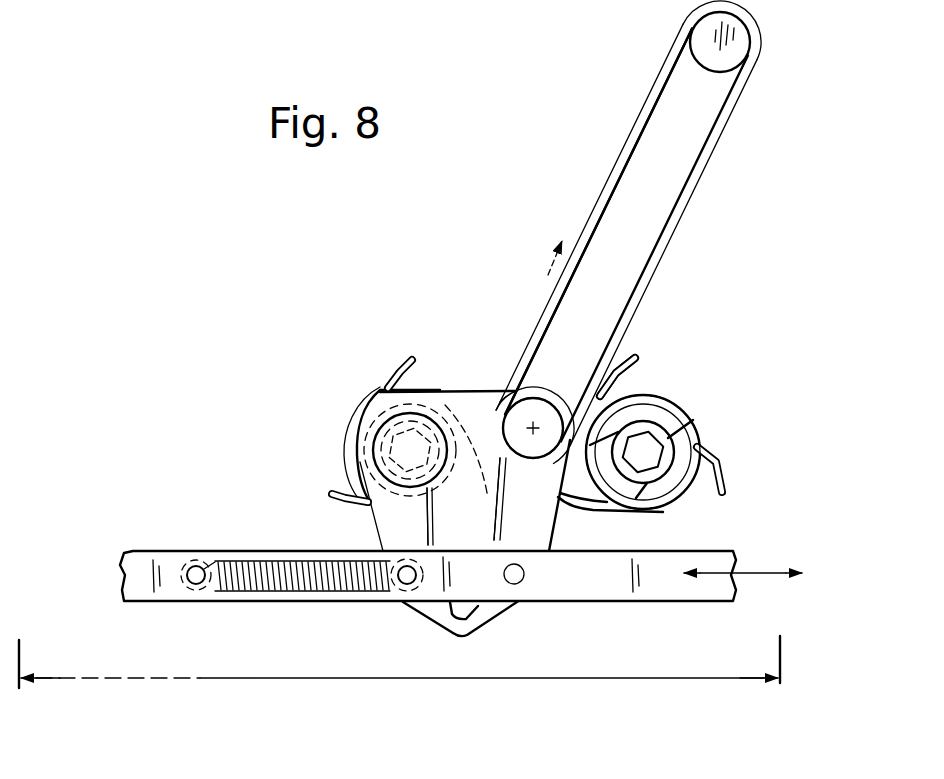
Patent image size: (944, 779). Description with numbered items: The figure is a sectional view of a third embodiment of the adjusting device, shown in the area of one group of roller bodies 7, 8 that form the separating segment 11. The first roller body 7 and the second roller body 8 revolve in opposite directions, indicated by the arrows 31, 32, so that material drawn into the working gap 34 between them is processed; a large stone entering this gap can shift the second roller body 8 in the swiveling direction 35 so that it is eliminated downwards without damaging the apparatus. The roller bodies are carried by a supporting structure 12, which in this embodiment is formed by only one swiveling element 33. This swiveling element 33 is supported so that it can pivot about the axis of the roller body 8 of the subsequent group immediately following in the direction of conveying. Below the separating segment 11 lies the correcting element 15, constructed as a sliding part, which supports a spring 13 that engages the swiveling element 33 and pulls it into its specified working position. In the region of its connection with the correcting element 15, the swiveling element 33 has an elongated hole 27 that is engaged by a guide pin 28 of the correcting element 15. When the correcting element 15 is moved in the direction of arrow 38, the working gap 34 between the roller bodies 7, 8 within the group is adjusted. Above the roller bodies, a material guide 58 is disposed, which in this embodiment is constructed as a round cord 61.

The first roller body 7 is at (372, 406).
The second roller body 8 is at (525, 464).
The separating segment 11 is at (257, 679).
The supporting structure 12 is at (478, 386).
The spring 13 is at (262, 557).
The correcting element 15 is at (658, 591).
The elongated hole 27 is at (478, 612).
The guide pin 28 is at (526, 574).
The arrow 31 is at (660, 365).
The arrow 32 is at (561, 383).
The swiveling element 33 is at (490, 542).
The working gap 34 is at (630, 352).
The swiveling direction 35 is at (499, 394).
The arrow 38 is at (758, 573).
The material guide 58 is at (754, 96).
The round cord 61 is at (630, 145).